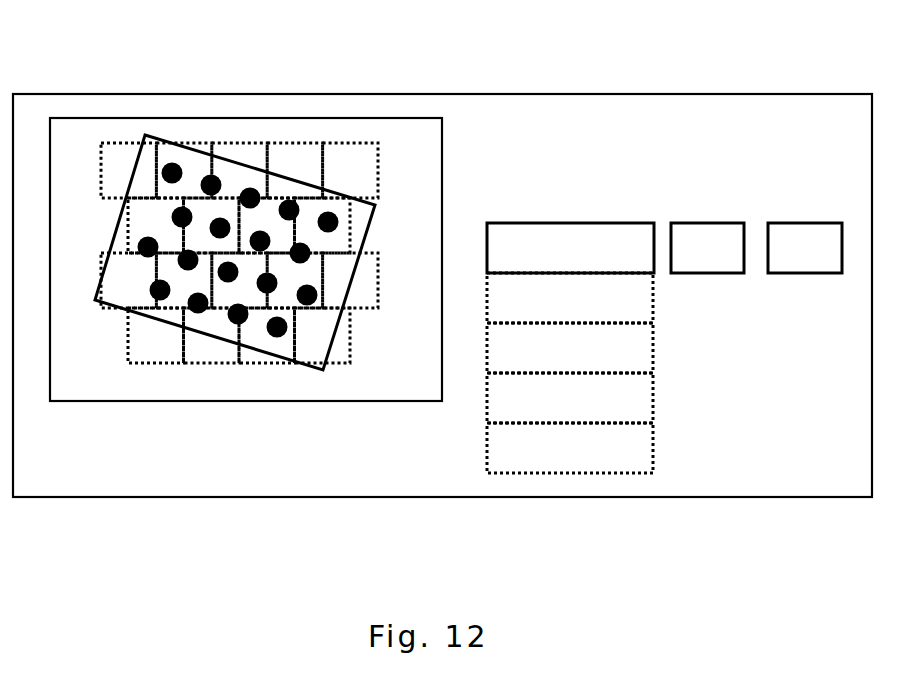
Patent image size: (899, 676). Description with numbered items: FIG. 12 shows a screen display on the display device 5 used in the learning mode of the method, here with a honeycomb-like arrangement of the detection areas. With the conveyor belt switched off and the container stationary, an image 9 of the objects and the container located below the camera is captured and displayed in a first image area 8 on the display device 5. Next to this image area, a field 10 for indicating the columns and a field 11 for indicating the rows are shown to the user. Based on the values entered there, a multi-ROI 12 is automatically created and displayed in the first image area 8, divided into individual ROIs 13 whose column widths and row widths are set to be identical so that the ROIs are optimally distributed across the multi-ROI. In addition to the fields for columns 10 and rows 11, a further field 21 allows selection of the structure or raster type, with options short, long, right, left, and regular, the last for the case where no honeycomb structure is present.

The display device 5 is at (216, 498).
The first image area 8 is at (382, 402).
The image 9 is at (109, 458).
The field for indicating the columns 10 is at (700, 222).
The field for indicating the rows 11 is at (799, 222).
The multi-ROI 12 is at (267, 283).
The ROIs 13 is at (123, 157).
The field for selecting the raster type 21 is at (565, 222).